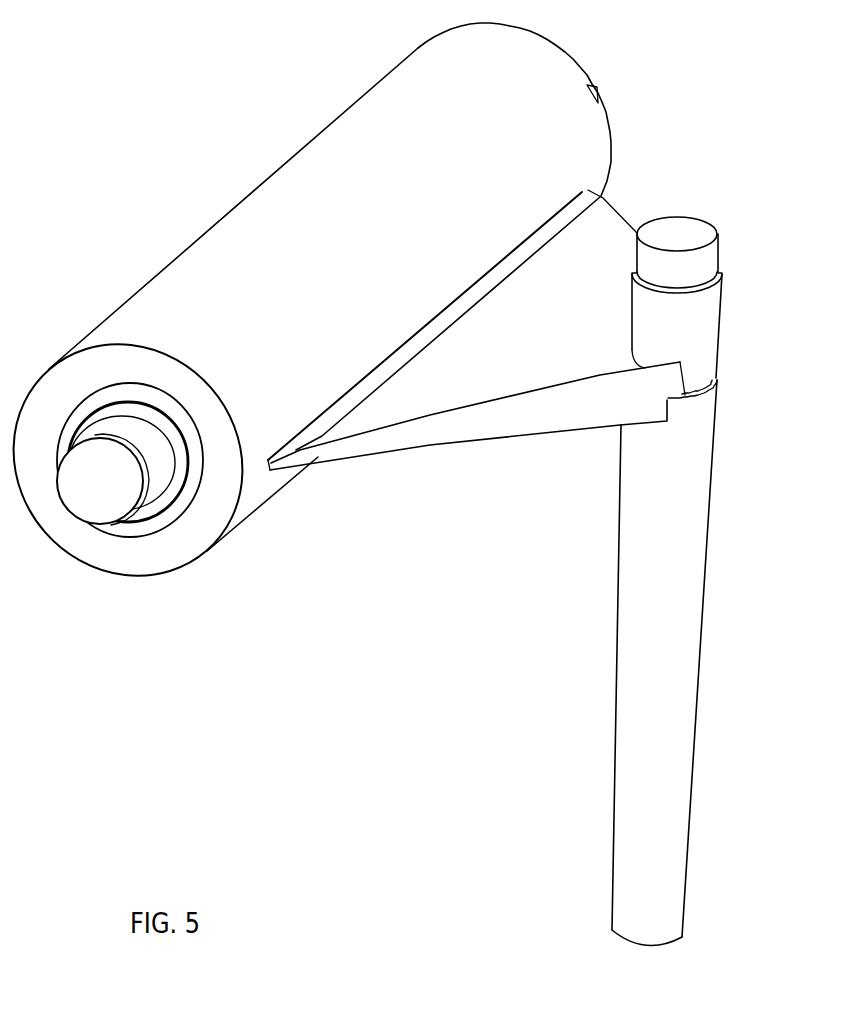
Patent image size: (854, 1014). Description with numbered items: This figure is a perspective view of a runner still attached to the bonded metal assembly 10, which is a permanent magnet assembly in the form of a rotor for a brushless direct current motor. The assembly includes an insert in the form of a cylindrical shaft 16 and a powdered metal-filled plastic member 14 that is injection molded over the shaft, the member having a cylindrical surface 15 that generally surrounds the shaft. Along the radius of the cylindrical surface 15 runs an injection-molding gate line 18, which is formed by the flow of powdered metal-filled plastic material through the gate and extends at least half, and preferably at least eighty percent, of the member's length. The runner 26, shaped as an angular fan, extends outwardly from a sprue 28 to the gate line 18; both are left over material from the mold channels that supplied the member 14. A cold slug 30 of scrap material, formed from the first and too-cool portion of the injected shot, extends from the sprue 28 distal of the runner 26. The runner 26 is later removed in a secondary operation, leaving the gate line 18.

The bonded metal assembly 10 is at (176, 114).
The powdered metal-filled plastic member 14 is at (215, 545).
The cylindrical surface 15 is at (274, 262).
The cylindrical shaft 16 is at (98, 530).
The injection-molding gate line 18 is at (582, 192).
The runner 26 is at (487, 440).
The sprue 28 is at (618, 655).
The cold slug 30 is at (728, 240).